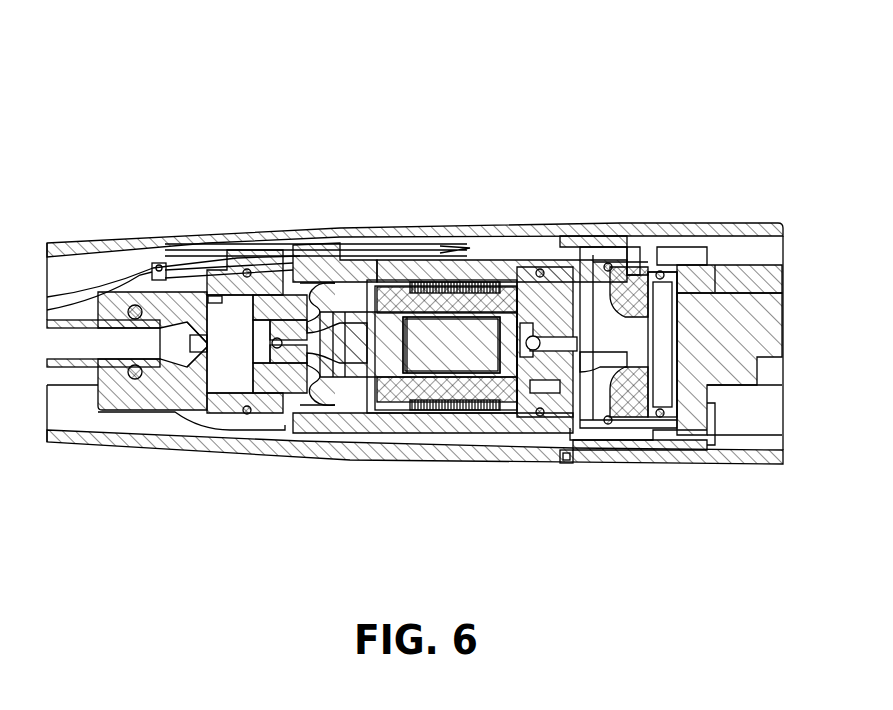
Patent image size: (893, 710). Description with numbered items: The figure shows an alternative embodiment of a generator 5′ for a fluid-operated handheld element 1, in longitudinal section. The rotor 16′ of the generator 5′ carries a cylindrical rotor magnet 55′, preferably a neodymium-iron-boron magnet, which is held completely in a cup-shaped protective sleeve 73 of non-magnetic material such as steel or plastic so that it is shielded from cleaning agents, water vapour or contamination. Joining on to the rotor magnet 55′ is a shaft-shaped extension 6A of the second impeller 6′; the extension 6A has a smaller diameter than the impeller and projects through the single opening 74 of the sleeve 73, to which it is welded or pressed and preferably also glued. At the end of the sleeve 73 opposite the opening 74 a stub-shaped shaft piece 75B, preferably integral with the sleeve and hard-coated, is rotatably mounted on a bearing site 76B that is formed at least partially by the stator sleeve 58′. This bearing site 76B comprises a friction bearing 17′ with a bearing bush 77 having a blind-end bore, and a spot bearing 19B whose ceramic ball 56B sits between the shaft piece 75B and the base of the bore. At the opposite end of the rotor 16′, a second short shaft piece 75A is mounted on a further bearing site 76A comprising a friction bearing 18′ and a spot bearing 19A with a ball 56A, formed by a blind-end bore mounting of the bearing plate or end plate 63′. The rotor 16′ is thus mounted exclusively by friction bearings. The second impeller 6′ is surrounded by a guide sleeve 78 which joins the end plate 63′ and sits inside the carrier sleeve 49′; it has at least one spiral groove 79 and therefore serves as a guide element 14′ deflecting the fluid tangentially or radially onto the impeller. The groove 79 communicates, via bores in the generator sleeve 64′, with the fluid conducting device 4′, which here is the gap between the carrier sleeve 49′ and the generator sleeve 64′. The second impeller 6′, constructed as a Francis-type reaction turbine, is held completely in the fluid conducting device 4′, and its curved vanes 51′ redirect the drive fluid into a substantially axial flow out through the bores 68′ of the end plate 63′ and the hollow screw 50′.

The handheld element 1 is at (346, 96).
The fluid conducting device 4′ is at (410, 268).
The generator 5′ is at (444, 268).
The second impeller 6′ is at (312, 388).
The shaft-shaped extension 6A is at (358, 376).
The guide element 14′ is at (297, 360).
The guide sleeve 78 is at (278, 272).
The rotor 16′ is at (363, 303).
The friction bearing 17′ is at (536, 316).
The friction bearing 18′ is at (262, 378).
The spot bearing 19A is at (268, 334).
The spot bearing 19B is at (575, 320).
The carrier sleeve 49′ is at (187, 400).
The hollow screw 50′ is at (150, 380).
The vanes 51′ is at (308, 285).
The rotor magnet 55′ is at (466, 361).
The ball 56A is at (270, 346).
The ball 56B is at (575, 337).
The stator sleeve 58′ is at (390, 387).
The bearing plate or end plate 63′ is at (213, 282).
The generator sleeve 64′ is at (470, 402).
The bores 68′ is at (285, 400).
The protective sleeve 73 is at (427, 404).
The opening 74 is at (337, 368).
The shaft piece 75A is at (290, 340).
The shaft piece 75B is at (517, 402).
The bearing site 76A is at (245, 414).
The bearing site 76B is at (547, 328).
The bearing bush 77 is at (568, 463).
The groove 79 is at (342, 310).